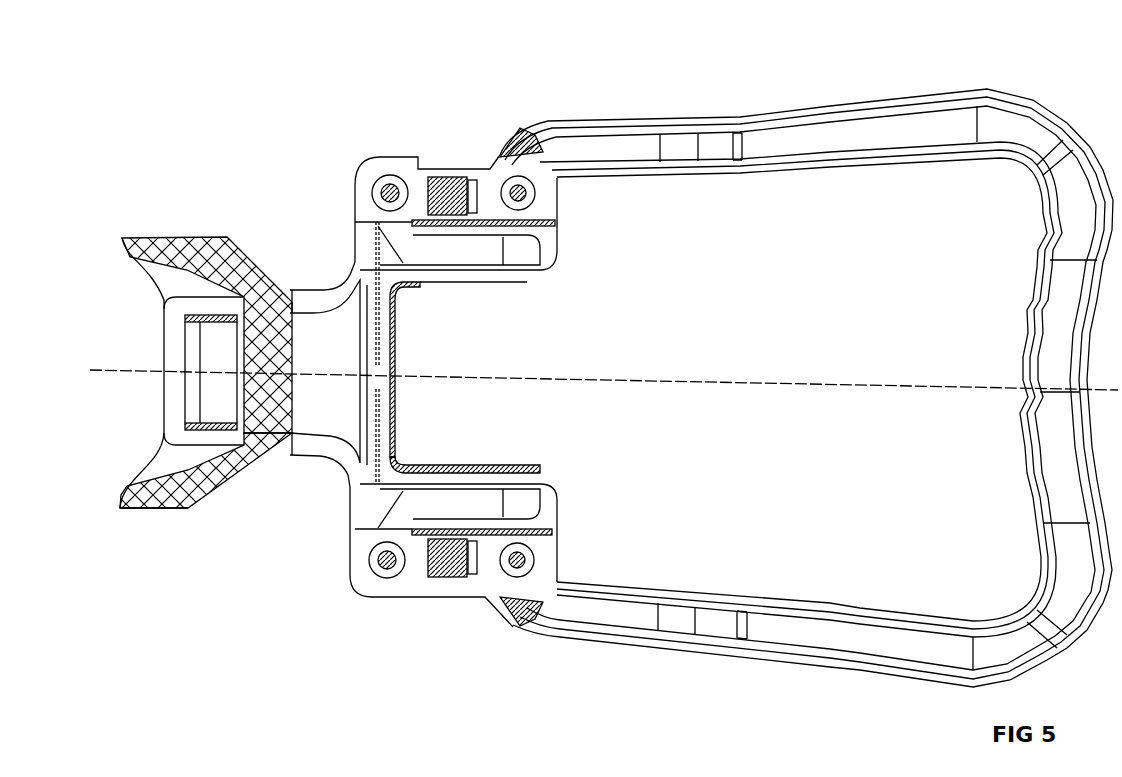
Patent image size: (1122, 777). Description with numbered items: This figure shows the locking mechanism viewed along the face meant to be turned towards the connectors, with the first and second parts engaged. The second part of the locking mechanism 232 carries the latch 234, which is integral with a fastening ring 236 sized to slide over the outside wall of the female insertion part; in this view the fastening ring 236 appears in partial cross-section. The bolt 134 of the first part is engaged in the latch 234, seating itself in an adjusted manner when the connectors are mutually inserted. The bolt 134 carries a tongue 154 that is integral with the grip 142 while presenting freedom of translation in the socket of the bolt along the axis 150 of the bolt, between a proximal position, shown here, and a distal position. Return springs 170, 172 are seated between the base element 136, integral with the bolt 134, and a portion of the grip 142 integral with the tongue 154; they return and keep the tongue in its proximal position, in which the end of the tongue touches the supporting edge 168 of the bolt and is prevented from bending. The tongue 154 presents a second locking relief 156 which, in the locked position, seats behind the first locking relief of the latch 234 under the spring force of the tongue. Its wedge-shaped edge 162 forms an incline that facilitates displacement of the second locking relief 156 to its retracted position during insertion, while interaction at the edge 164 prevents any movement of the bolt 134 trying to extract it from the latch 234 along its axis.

The bolt 134 is at (172, 428).
The base element 136 is at (376, 176).
The grip 142 is at (642, 150).
The axis of the bolt 150 is at (678, 382).
The tongue 154 is at (307, 390).
The second locking relief 156 is at (217, 393).
The edge of the second locking relief 162 is at (193, 360).
The edge of the second locking relief 164 is at (180, 415).
The supporting edge 168 is at (193, 333).
The return spring 170 is at (440, 177).
The return spring 172 is at (447, 567).
The second part of the locking mechanism 232 is at (113, 483).
The latch 234 is at (118, 220).
The ring 236 is at (187, 523).